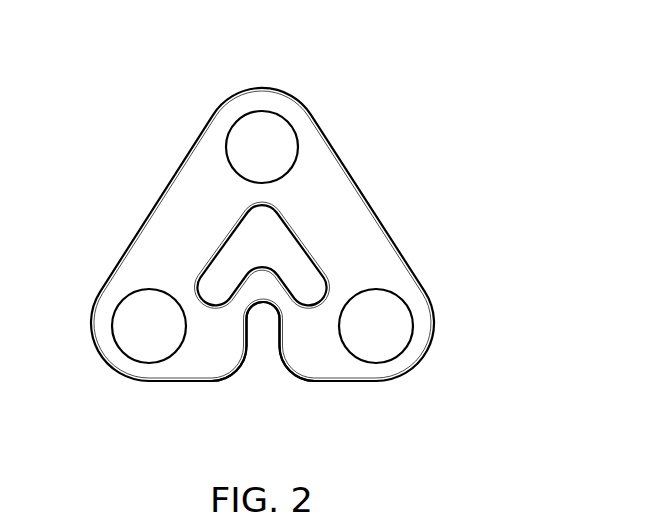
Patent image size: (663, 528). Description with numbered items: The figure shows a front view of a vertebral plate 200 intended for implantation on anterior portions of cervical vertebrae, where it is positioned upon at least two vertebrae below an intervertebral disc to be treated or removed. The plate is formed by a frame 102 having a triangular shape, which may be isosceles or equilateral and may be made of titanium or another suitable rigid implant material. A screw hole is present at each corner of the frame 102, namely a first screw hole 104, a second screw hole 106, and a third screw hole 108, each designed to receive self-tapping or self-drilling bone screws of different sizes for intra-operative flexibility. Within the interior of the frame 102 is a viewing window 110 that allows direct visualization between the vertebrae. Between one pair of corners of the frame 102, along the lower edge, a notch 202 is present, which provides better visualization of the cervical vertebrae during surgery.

The vertebral plate 200 is at (165, 62).
The frame 102 is at (151, 214).
The first screw hole 104 is at (298, 148).
The second screw hole 106 is at (117, 313).
The third screw hole 108 is at (410, 312).
The viewing window 110 is at (272, 242).
The notch 202 is at (260, 345).